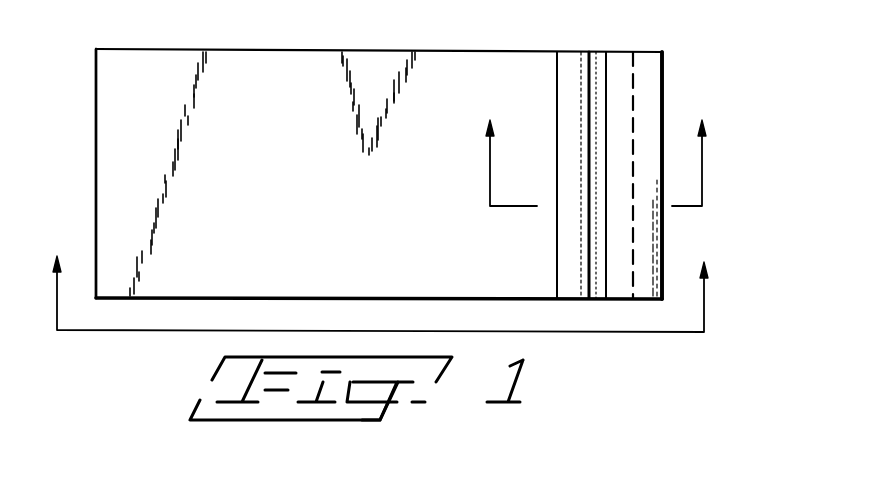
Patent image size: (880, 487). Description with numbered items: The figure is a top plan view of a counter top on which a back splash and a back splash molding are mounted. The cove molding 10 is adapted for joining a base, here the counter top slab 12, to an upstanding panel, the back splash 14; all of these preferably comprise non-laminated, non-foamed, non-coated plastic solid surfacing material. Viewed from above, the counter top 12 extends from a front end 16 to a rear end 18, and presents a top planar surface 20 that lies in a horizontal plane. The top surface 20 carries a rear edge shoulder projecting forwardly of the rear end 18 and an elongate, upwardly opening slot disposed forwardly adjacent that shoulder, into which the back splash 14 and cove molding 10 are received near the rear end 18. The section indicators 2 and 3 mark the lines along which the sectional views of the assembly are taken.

The cove molding 10 is at (592, 316).
The counter top slab 12 is at (178, 346).
The back splash 14 is at (634, 318).
The front end 16 is at (96, 133).
The rear end 18 is at (663, 228).
The top planar surface 20 is at (300, 227).
The section line 2- 2 is at (382, 277).
The section line 3- 3 is at (596, 144).